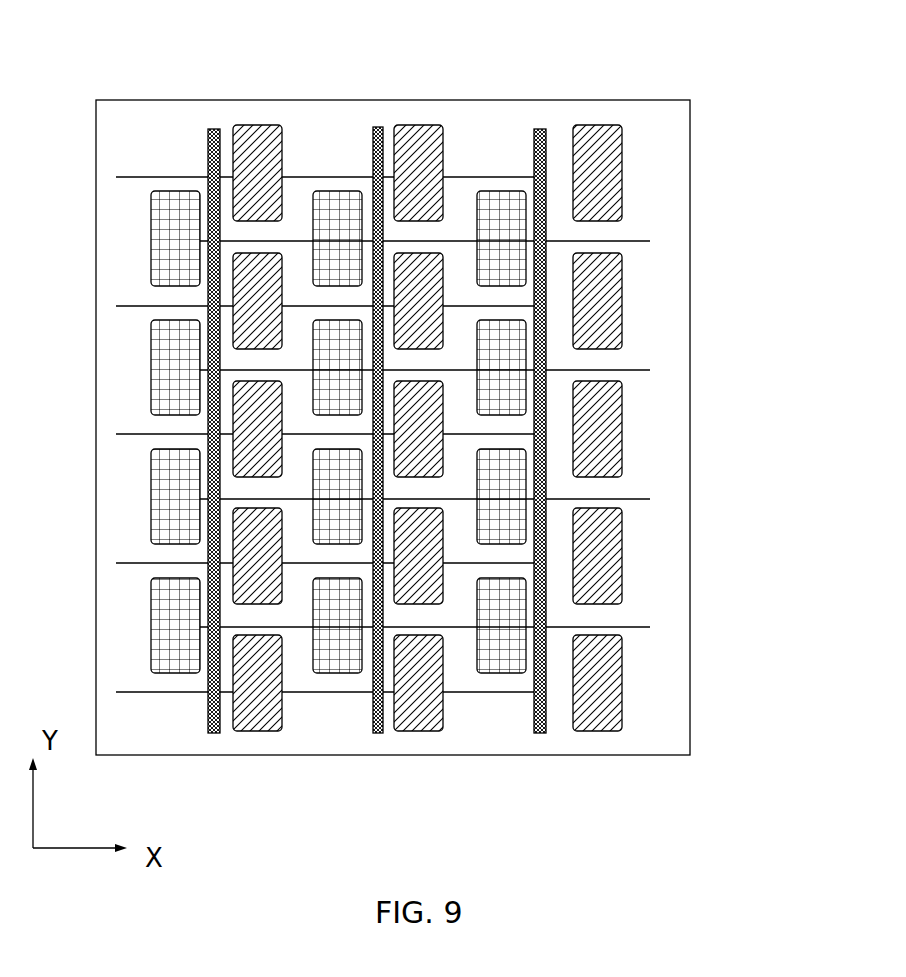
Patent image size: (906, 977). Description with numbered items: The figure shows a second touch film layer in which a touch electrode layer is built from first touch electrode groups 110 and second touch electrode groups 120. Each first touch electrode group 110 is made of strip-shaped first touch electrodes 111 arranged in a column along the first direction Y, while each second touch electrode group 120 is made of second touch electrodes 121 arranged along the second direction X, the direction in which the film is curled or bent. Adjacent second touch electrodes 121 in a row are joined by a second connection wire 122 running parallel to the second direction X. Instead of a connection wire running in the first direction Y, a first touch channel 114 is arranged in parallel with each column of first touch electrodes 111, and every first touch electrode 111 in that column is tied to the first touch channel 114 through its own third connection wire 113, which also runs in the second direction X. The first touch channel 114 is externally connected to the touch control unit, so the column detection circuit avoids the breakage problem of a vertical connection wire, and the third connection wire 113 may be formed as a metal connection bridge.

The first touch electrode group 110 is at (601, 125).
The first touch electrode 111 is at (755, 547).
The third connection wire 113 is at (312, 177).
The first touch channel 114 is at (380, 127).
The second touch electrode group 120 is at (151, 621).
The second touch electrode 121 is at (513, 763).
The second connection wire 122 is at (294, 627).